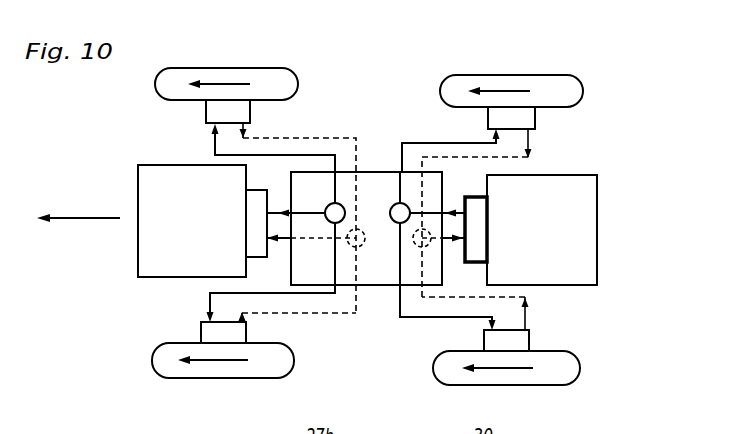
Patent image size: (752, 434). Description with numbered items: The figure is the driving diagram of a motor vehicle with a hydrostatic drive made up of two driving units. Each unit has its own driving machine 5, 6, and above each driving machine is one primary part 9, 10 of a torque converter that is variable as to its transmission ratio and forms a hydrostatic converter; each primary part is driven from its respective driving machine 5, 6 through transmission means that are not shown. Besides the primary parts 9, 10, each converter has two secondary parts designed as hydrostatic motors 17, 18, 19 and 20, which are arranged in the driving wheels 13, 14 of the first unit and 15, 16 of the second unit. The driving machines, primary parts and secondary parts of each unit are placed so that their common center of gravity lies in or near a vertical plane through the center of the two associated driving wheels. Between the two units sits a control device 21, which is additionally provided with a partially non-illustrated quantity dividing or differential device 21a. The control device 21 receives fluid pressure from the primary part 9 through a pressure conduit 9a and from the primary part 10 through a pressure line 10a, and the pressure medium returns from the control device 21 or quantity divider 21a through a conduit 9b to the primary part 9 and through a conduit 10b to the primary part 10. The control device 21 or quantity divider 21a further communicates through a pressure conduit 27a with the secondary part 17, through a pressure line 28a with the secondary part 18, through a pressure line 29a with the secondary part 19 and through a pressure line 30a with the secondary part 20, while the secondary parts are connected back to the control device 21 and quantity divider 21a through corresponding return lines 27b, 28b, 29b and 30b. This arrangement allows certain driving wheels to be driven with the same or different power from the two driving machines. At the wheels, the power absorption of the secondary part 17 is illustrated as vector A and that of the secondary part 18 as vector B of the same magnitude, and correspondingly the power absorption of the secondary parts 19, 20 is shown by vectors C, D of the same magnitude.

The driving machine 5 is at (177, 192).
The driving machine 6 is at (598, 208).
The primary part 9 is at (257, 202).
The pressure conduit 9a is at (302, 213).
The conduit 9b is at (310, 238).
The primary part 10 is at (480, 213).
The pressure line 10a is at (433, 213).
The conduit 10b is at (445, 243).
The driving wheel 13 is at (165, 87).
The driving wheel 14 is at (163, 360).
The driving wheel 15 is at (578, 92).
The driving wheel 16 is at (570, 373).
The hydrostatic motor 17 is at (222, 113).
The hydrostatic motor 18 is at (202, 333).
The hydrostatic motor 19 is at (520, 118).
The hydrostatic motor 20 is at (517, 342).
The control device 21 is at (366, 152).
The quantity dividing or differential device 21a is at (379, 197).
The pressure conduit 27a is at (212, 143).
The return line 27b is at (268, 136).
The pressure line 28a is at (207, 295).
The return line 28b is at (297, 316).
The pressure line 29a is at (443, 143).
The return line 29b is at (532, 157).
The pressure line 30a is at (440, 320).
The return line 30b is at (525, 308).
The vector A is at (233, 80).
The vector B is at (222, 362).
The vector C is at (515, 90).
The vector D is at (503, 368).